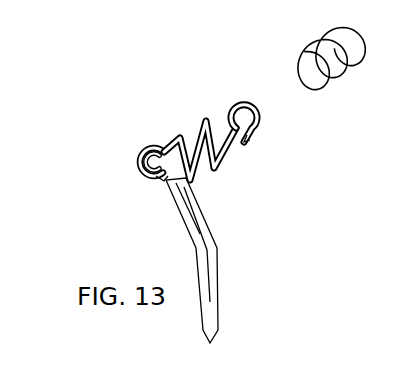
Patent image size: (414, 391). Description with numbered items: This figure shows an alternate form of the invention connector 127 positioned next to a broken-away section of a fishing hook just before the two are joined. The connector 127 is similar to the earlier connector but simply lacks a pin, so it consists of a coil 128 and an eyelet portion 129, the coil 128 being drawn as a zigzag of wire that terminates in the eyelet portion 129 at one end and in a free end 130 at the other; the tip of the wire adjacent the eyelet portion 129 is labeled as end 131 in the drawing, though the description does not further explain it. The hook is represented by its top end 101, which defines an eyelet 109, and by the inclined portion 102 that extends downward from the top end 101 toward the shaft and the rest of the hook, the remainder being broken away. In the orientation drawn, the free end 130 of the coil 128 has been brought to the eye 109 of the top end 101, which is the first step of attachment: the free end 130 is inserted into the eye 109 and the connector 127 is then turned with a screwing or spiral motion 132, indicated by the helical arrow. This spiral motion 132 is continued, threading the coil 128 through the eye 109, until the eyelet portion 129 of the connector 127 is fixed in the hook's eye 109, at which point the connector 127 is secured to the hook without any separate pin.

The top end 101 is at (186, 194).
The inclined portion 102 is at (230, 308).
The eyelet 109 is at (141, 189).
The connector 127 is at (230, 152).
The coil 128 is at (186, 114).
The eyelet portion 129 is at (236, 94).
The free end 130 is at (143, 142).
The free end of wire 131 is at (253, 150).
The spiral motion 132 is at (286, 99).